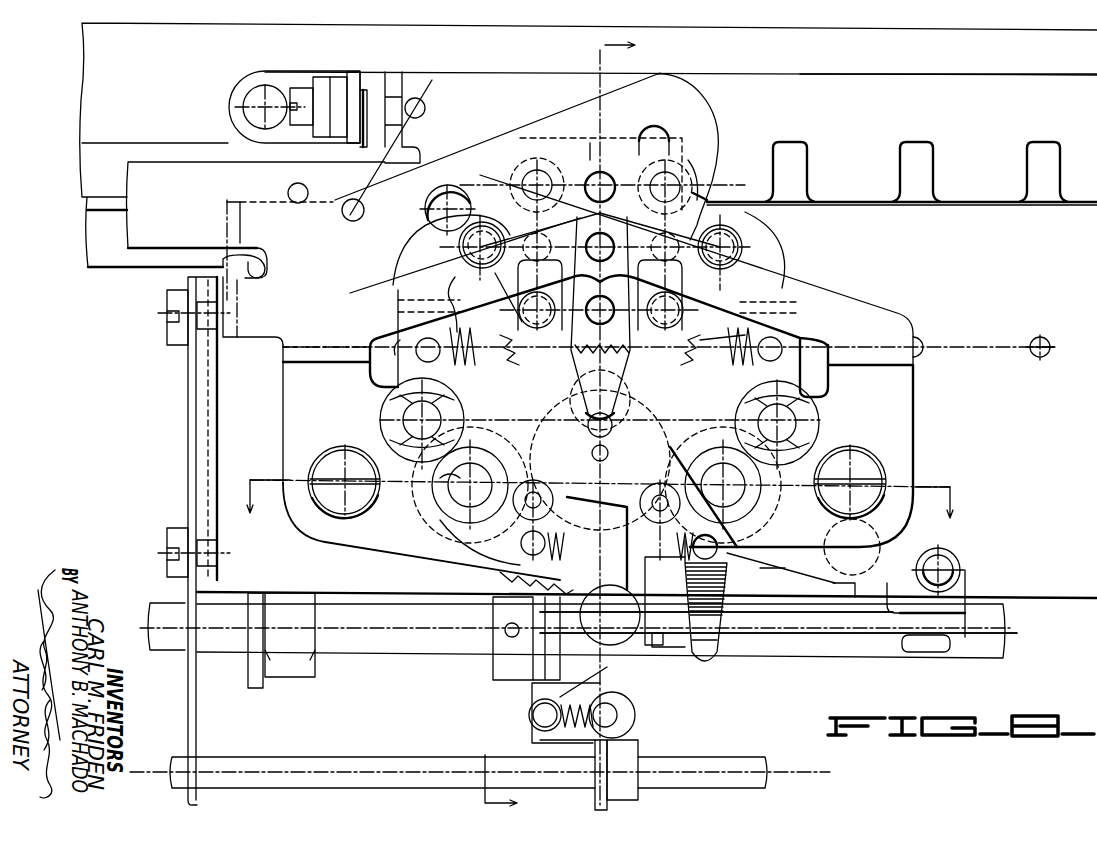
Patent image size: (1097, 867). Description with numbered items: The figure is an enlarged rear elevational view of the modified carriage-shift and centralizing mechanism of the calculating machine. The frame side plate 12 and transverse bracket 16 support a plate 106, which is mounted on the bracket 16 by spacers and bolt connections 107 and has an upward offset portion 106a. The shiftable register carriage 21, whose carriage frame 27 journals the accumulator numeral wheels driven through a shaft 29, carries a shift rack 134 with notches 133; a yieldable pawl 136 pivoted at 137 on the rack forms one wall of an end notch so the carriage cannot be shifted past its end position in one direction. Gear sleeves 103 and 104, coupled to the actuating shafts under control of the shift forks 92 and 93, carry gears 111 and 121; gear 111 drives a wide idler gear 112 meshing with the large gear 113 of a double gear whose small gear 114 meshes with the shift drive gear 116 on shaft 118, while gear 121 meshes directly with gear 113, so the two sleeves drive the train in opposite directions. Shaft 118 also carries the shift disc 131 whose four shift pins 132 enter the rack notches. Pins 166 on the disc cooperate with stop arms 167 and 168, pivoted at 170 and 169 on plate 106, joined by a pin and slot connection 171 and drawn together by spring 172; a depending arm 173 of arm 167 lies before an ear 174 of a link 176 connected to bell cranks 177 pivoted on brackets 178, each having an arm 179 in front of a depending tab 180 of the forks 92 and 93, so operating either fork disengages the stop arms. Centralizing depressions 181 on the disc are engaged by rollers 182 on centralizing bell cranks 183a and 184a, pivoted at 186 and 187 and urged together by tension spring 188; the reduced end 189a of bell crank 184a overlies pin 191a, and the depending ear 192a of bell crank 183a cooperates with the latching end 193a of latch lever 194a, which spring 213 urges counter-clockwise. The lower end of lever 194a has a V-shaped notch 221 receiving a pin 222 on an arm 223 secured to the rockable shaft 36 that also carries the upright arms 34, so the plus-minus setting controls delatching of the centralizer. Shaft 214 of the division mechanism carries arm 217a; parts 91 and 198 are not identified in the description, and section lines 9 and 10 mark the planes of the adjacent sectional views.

The register carriage 21 is at (73, 111).
The carriage frame 27 is at (80, 180).
The side plate 12 is at (190, 422).
The transverse bracket 16 is at (1068, 585).
The shaft 29 is at (1050, 345).
The upright arm 34 is at (253, 690).
The rockable shaft 36 is at (357, 652).
The pin 91 is at (875, 548).
The shift fork 92 is at (427, 520).
The shift fork 93 is at (772, 568).
The gear sleeve 103 is at (440, 490).
The gear sleeve 104 is at (765, 495).
The plate 106 is at (913, 398).
The upward offset portion 106a is at (853, 308).
The bolt connection 107 is at (330, 458).
The gear 111 is at (440, 478).
The idler gear 112 is at (517, 582).
The large gear 113 is at (503, 357).
The small gear 114 is at (680, 345).
The shift drive gear 116 is at (550, 160).
The shaft 118 is at (597, 232).
The gear 121 is at (763, 518).
The shift drive disc 131 is at (503, 187).
The shift drive pin 132 is at (533, 173).
The notch 133 is at (1020, 173).
The shift rack 134 is at (986, 85).
The yieldable pawl 136 is at (694, 92).
The pivot 137 is at (425, 226).
The pin 166 is at (603, 180).
The stop arm 167 is at (520, 352).
The stop arm 168 is at (700, 372).
The pivot 169 is at (460, 560).
The pivot 170 is at (656, 475).
The pin and slot connection 171 is at (650, 428).
The spring 172 is at (727, 564).
The depending arm 173 is at (703, 656).
The ear 174 is at (663, 628).
The link 176 is at (755, 628).
The bell crank 177 is at (882, 652).
The bracket 178 is at (960, 583).
The arm 179 is at (830, 620).
The depending tab 180 is at (587, 604).
The centralizing depression 181 is at (597, 157).
The roller 182 is at (477, 220).
The centralizing bell crank 183a is at (400, 345).
The centralizing bell crank 184a is at (782, 256).
The pivot 186 is at (400, 414).
The pivot 187 is at (790, 420).
The tension spring 188 is at (715, 340).
The reduced end 189a is at (566, 405).
The pin 191a is at (655, 412).
The depending ear 192a is at (605, 472).
The latching end 193a is at (612, 540).
The latching lever 194a is at (560, 695).
The stop 198 is at (693, 173).
The spring 213 is at (593, 688).
The shaft 214 is at (328, 750).
The arm 217a is at (595, 787).
The V-shaped notch 221 is at (605, 700).
The pin 222 is at (622, 723).
The arm 223 is at (530, 728).
The section line 9- 9 is at (552, 422).
The base 10 is at (600, 487).